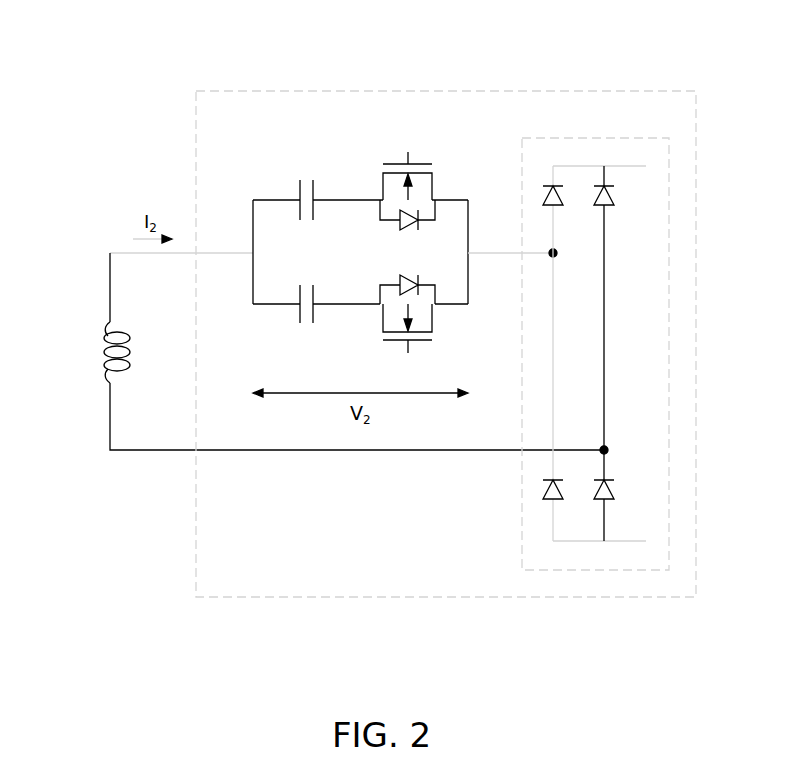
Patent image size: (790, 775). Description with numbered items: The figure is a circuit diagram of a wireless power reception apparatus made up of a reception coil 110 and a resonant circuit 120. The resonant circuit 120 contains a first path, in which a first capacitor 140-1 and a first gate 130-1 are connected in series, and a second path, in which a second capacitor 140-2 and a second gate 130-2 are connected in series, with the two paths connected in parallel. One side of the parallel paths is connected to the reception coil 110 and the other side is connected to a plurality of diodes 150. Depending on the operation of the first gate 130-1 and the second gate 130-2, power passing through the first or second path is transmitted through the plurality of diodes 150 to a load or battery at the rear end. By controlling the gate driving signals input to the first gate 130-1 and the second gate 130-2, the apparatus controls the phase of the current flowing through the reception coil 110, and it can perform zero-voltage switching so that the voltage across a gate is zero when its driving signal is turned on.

The reception coil 110 is at (105, 326).
The resonant circuit 120 is at (446, 90).
The first gate 130-1 is at (432, 182).
The second gate 130-2 is at (432, 318).
The first capacitor 140-1 is at (298, 188).
The second capacitor 140-2 is at (298, 311).
The plurality of diodes 150 is at (594, 138).